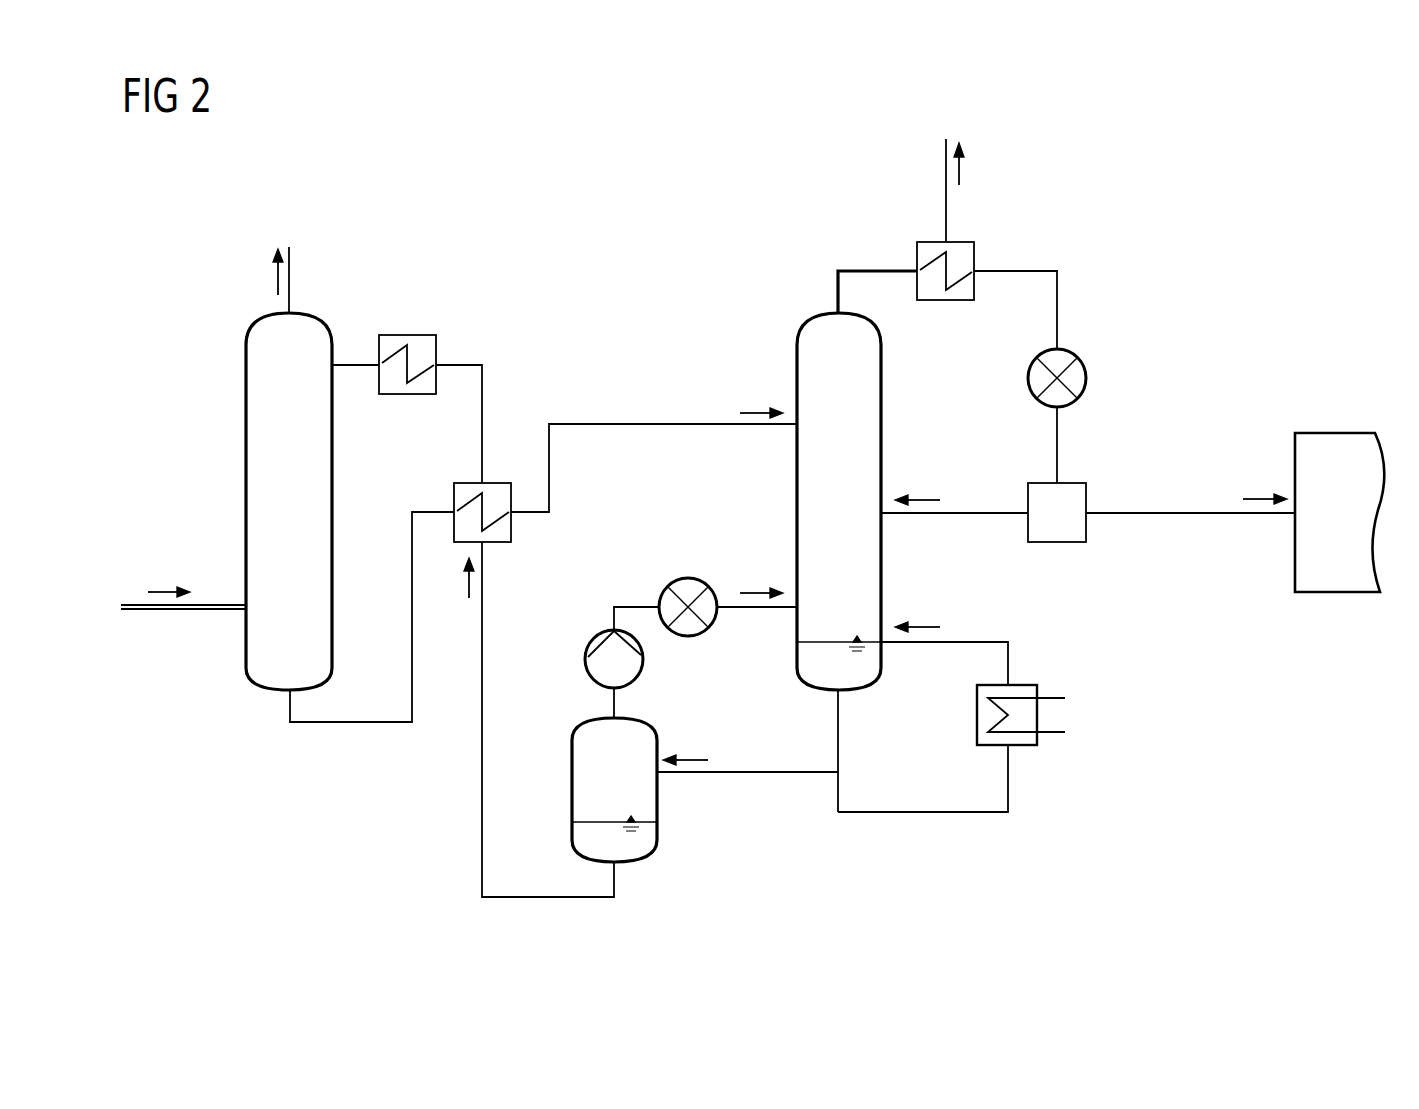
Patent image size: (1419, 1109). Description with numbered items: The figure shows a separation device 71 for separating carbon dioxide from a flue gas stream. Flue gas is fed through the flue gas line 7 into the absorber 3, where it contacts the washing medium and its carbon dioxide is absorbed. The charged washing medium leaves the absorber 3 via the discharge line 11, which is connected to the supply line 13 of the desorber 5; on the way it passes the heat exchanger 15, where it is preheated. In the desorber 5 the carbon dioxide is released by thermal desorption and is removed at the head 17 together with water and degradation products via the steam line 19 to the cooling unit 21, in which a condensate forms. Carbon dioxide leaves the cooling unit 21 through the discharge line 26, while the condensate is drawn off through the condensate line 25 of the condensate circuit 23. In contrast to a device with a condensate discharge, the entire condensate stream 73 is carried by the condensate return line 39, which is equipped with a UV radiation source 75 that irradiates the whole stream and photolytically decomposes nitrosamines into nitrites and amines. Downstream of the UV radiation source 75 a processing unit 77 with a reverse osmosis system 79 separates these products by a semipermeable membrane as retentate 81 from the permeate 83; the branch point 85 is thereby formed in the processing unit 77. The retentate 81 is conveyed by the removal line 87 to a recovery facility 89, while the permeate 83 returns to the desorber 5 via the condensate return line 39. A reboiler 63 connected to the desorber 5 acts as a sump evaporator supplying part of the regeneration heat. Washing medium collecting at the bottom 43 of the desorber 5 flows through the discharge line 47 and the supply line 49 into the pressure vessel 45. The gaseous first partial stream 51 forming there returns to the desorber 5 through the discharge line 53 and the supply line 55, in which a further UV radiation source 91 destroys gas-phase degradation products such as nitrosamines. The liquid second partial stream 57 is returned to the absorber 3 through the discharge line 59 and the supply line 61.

The absorber 3 is at (246, 452).
The desorber 5 is at (882, 373).
The flue gas line 7 is at (168, 612).
The discharge line 11 is at (348, 725).
The supply line 13 is at (640, 424).
The heat exchanger 15 is at (493, 545).
The head 17 is at (815, 313).
The steam line 19 is at (880, 270).
The cooling unit 21 is at (963, 302).
The condensate circuit 23 is at (1074, 437).
The condensate line 25 is at (1013, 268).
The discharge line 26 is at (944, 172).
The condensate return line 39 is at (1057, 303).
The bottom 43 is at (868, 668).
The pressure vessel 45 is at (571, 788).
The discharge line 47 is at (840, 730).
The supply line 49 is at (753, 773).
The gaseous first partial stream 51 is at (623, 579).
The discharge line 53 is at (612, 700).
The supply line 55 is at (634, 607).
The second partial stream 57 is at (550, 900).
The discharge line 59 is at (548, 760).
The supply line 61 is at (463, 363).
The reboiler 63 is at (1060, 748).
The separation device 71 is at (1204, 147).
The condensate stream 73 is at (1115, 378).
The UV radiation source 75 is at (1087, 378).
The processing unit 77 is at (1072, 582).
The reverse osmosis system 79 is at (1058, 543).
The retentate 81 is at (1190, 473).
The permeate 83 is at (962, 513).
The branch point 85 is at (1105, 524).
The removal line 87 is at (1203, 513).
The recovery facility 89 is at (1335, 433).
The further UV radiation source 91 is at (688, 577).